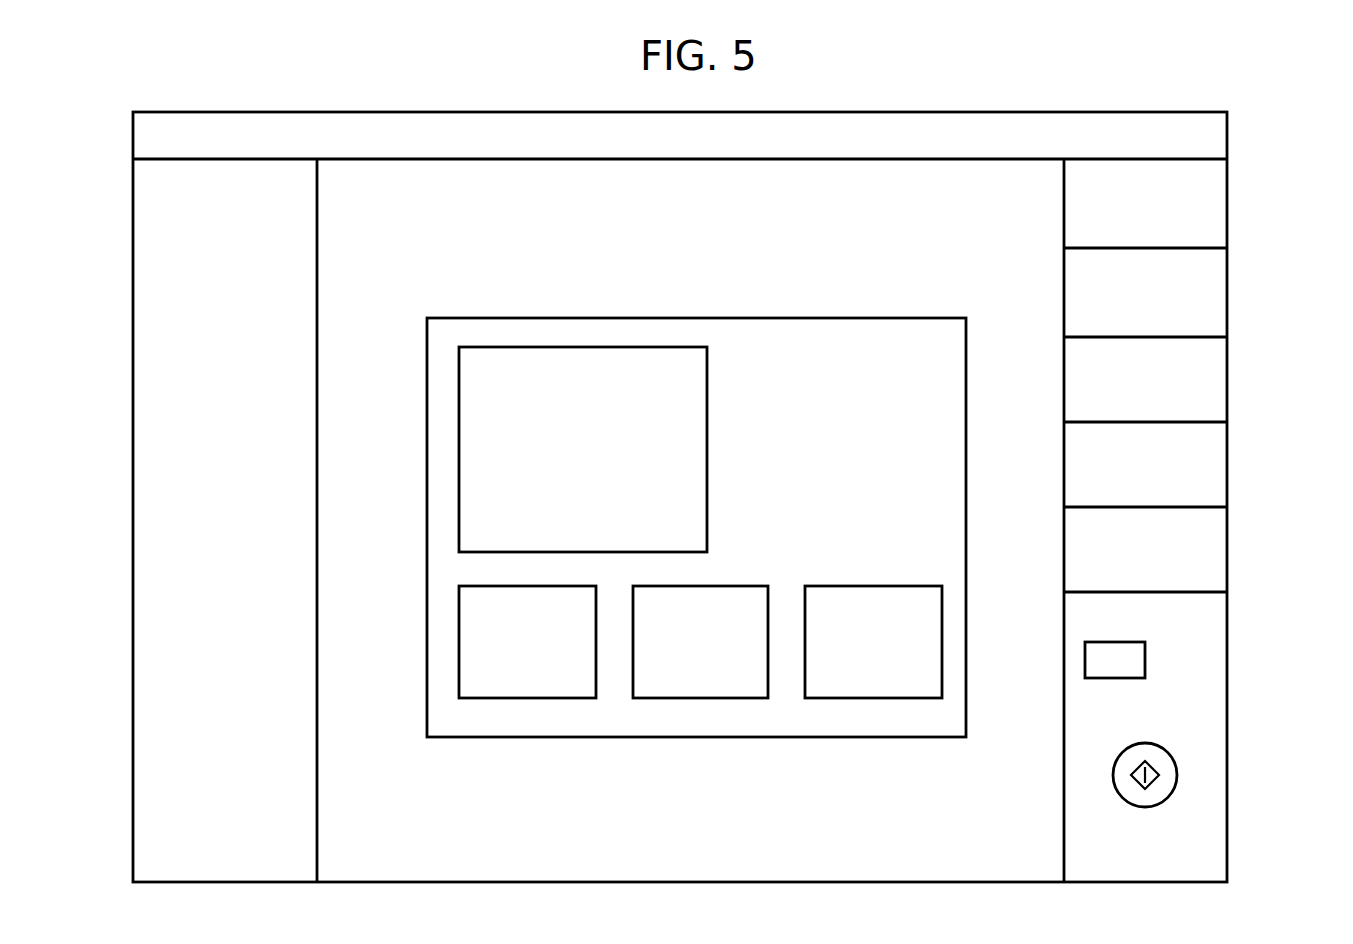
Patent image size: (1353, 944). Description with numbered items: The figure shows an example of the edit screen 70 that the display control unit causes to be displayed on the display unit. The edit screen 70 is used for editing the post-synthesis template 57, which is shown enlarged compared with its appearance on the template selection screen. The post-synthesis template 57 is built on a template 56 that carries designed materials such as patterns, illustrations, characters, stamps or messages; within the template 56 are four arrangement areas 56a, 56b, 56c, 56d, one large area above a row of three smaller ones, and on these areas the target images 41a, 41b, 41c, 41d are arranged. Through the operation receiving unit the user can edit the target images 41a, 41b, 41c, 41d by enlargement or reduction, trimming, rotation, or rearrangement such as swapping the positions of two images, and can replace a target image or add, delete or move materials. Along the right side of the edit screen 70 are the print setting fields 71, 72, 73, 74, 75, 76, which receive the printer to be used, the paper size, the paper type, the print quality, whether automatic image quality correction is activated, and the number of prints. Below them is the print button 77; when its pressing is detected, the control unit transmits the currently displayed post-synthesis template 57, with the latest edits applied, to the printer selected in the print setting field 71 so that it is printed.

The edit screen 70 is at (895, 113).
The print setting field 71 is at (1218, 199).
The print setting field 72 is at (1218, 294).
The print setting field 73 is at (1218, 386).
The print setting field 74 is at (1218, 466).
The print setting field 75 is at (1222, 537).
The print setting field 76 is at (1140, 637).
The print button 77 is at (1177, 768).
The post-synthesis template 57 is at (405, 330).
The template 56 is at (530, 316).
The arrangement area 56a is at (592, 347).
The arrangement area 56b is at (500, 700).
The arrangement area 56c is at (690, 700).
The arrangement area 56d is at (862, 700).
The target image 41a is at (664, 392).
The target image 41b is at (545, 677).
The target image 41c is at (727, 677).
The target image 41d is at (914, 680).